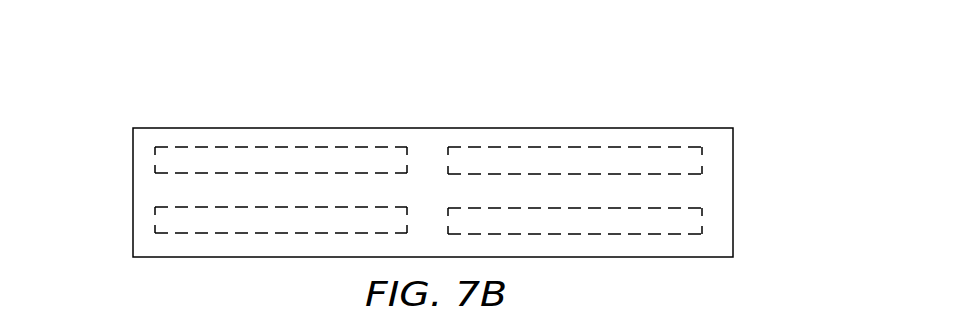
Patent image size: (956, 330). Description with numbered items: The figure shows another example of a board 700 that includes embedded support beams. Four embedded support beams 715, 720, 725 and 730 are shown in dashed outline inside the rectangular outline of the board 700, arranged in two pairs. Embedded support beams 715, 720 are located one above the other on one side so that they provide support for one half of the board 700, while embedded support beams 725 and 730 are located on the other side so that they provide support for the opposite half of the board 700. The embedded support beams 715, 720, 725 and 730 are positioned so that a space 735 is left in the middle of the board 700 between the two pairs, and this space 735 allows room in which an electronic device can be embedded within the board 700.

The board 700 is at (669, 79).
The embedded support beam 715 is at (162, 161).
The embedded support beam 720 is at (162, 217).
The embedded support beam 725 is at (695, 163).
The embedded support beam 730 is at (695, 219).
The space 735 is at (427, 186).